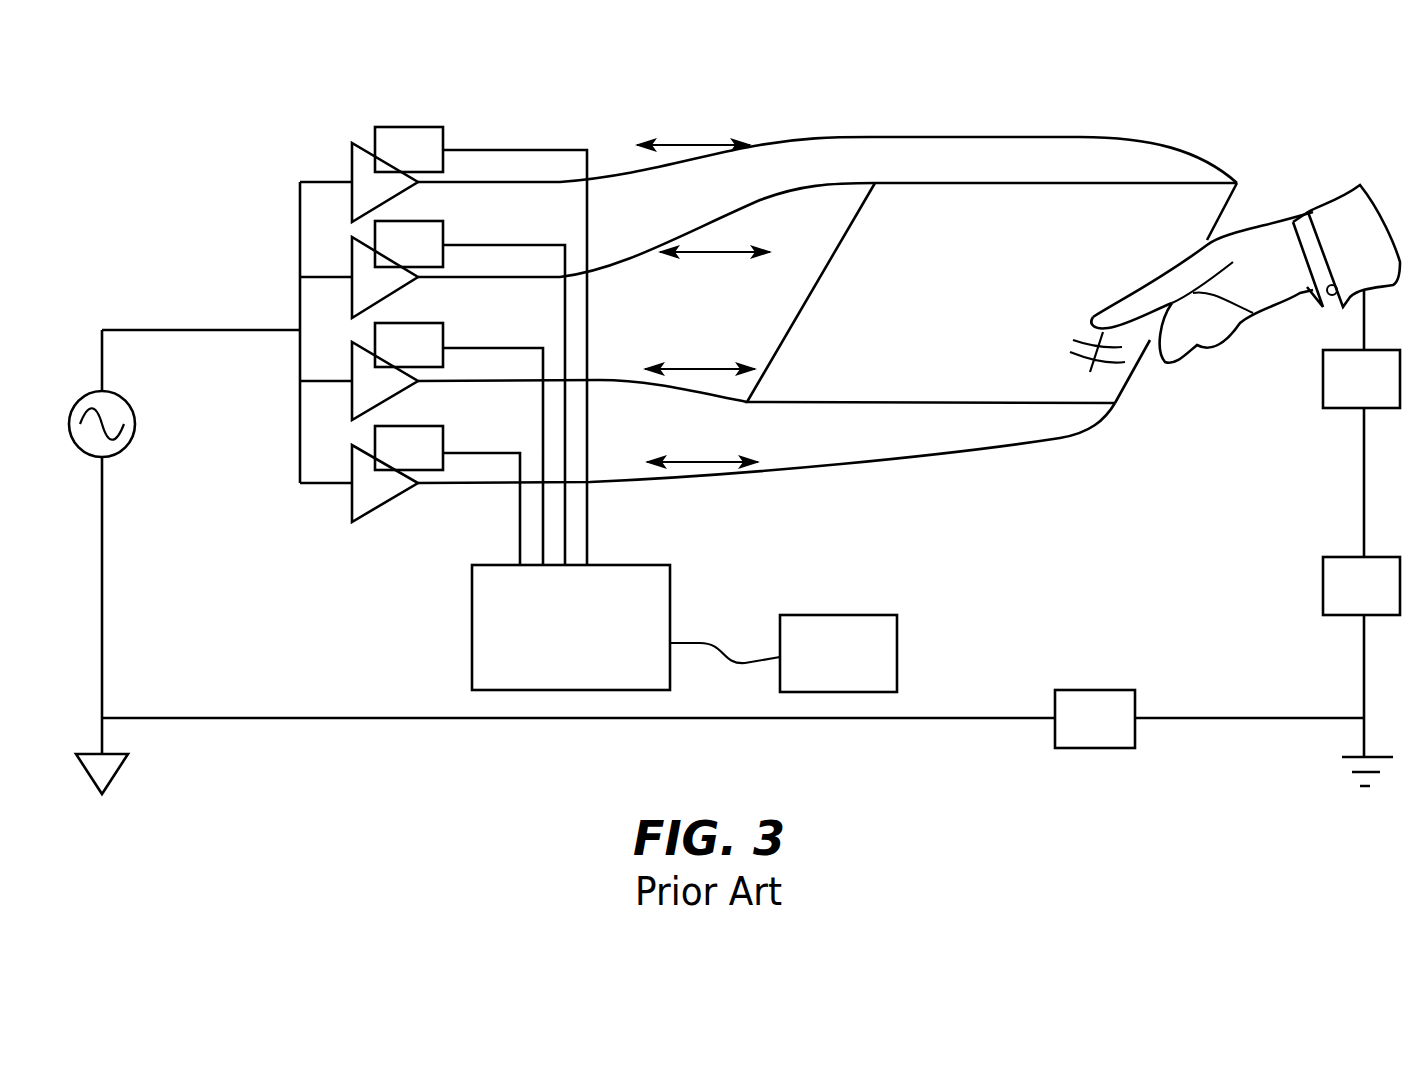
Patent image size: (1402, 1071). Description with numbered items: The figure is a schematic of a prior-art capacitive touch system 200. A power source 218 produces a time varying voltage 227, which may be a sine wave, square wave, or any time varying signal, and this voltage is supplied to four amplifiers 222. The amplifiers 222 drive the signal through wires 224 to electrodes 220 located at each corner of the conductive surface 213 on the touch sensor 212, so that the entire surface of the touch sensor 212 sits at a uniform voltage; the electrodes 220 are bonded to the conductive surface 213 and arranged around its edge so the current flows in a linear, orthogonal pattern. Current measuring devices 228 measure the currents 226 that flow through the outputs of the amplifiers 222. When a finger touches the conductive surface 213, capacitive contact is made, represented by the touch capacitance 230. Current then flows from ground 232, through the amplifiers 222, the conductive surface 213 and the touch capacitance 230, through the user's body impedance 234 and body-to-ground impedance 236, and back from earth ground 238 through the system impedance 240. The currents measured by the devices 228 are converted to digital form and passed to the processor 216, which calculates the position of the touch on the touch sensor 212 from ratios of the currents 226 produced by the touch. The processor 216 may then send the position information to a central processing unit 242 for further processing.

The capacitive touch system 200 is at (262, 208).
The touch sensor 212 is at (1118, 215).
The conductive surface 213 is at (1012, 212).
The processor 216 is at (600, 645).
The power source 218 is at (133, 406).
The electrodes 220 is at (874, 183).
The amplifiers 222 is at (393, 198).
The wires 224 is at (600, 176).
The currents 226 is at (692, 113).
The voltage 227 is at (155, 330).
The current measuring devices 228 is at (434, 163).
The capacitance 230 is at (1137, 375).
The ground 232 is at (120, 762).
The body impedance 234 is at (1386, 397).
The body-to-ground impedance 236 is at (1386, 603).
The earth ground 238 is at (1345, 758).
The system impedance 240 is at (1120, 735).
The central processing unit (CPU) 242 is at (863, 667).